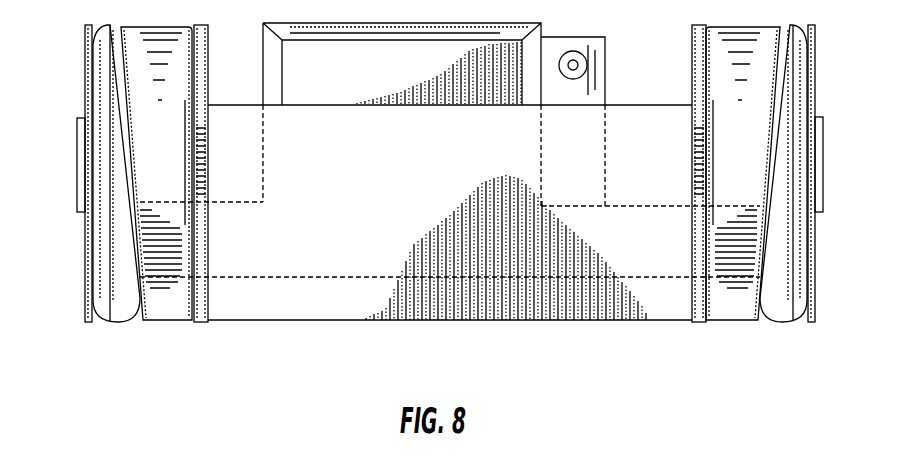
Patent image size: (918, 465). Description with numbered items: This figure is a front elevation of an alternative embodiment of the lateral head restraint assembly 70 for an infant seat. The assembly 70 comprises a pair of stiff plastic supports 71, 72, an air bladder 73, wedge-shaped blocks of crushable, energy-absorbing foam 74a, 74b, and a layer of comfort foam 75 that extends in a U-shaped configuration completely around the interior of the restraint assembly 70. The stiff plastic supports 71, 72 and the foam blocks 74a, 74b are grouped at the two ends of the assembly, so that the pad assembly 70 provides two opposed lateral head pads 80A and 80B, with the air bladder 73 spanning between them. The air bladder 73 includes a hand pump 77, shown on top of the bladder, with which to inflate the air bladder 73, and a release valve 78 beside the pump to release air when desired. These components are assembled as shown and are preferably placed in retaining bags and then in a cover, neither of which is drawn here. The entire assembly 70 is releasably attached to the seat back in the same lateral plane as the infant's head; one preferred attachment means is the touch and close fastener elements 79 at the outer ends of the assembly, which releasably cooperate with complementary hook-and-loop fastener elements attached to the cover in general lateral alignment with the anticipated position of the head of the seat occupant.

The lateral head restraint assembly 70 is at (345, 357).
The stiff plastic support 71 is at (822, 297).
The stiff plastic support 72 is at (85, 312).
The air bladder 73 is at (768, 318).
The wedge-shaped block of crushable, energy-absorbing foam 74a is at (732, 318).
The wedge-shaped block of crushable, energy-absorbing foam 74b is at (170, 315).
The layer of comfort foam 75 is at (692, 307).
The hand pump 77 is at (399, 79).
The release valve 78 is at (573, 65).
The touch and close fastener elements 79 is at (77, 164).
The lateral head pad 80A is at (754, 241).
The lateral head pad 80B is at (444, 228).